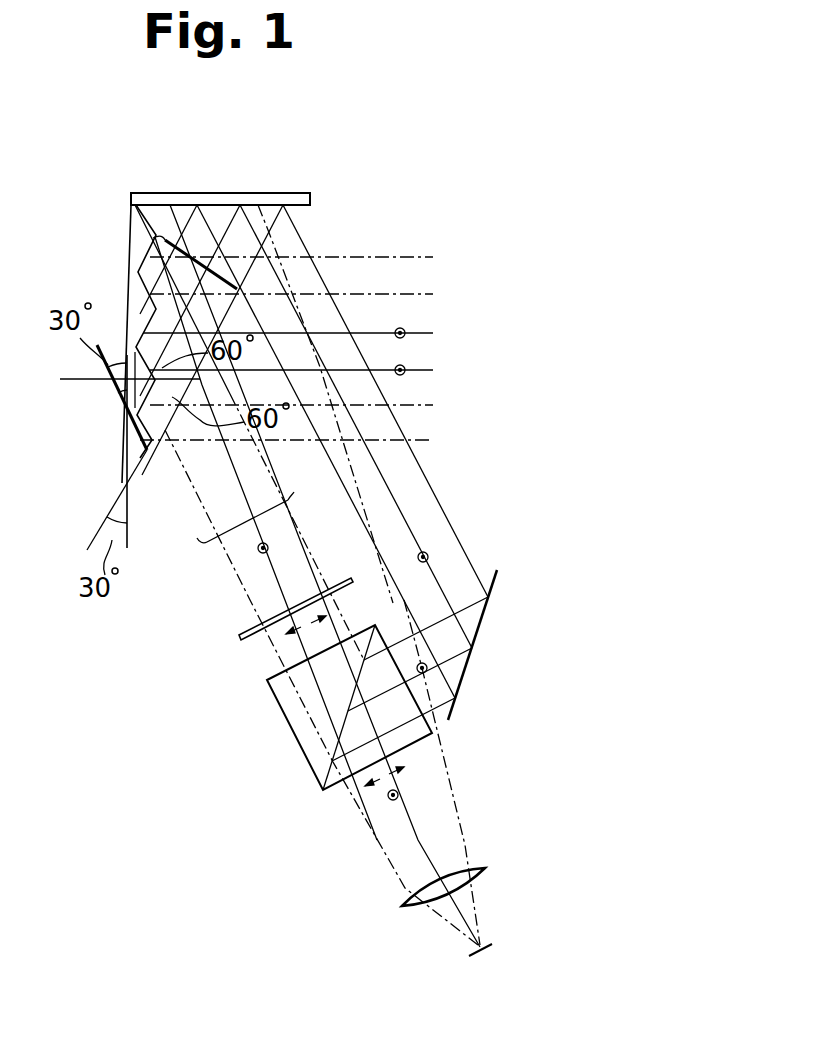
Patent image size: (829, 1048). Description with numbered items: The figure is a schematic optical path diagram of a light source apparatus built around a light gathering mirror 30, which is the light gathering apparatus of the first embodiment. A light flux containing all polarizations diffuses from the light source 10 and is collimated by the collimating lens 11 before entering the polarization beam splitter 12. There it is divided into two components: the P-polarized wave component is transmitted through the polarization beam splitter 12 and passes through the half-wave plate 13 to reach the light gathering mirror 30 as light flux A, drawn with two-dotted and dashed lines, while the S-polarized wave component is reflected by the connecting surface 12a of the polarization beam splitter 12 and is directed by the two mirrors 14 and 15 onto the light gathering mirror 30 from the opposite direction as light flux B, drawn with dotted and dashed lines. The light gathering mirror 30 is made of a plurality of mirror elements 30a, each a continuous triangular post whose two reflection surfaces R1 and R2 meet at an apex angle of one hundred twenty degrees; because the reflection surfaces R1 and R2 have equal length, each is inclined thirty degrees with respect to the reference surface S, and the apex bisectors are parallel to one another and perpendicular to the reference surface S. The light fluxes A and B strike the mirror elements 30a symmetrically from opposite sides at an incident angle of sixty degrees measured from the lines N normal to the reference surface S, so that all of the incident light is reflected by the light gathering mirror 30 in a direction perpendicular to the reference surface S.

The light source 10 is at (492, 955).
The collimating lens 11 is at (488, 874).
The polarization beam splitter 12 is at (280, 715).
The connecting surface 12a is at (335, 758).
The λ/2 plate 13 is at (240, 638).
The mirror 14 is at (497, 578).
The mirror 15 is at (310, 207).
The light gathering mirror 30 is at (116, 453).
The mirror element 30a is at (150, 312).
The light flux A is at (245, 530).
The light flux B is at (195, 257).
The normal line N is at (80, 380).
The reference surface S is at (130, 533).
The reflection surface R1 is at (140, 462).
The reflection surface R2 is at (168, 418).